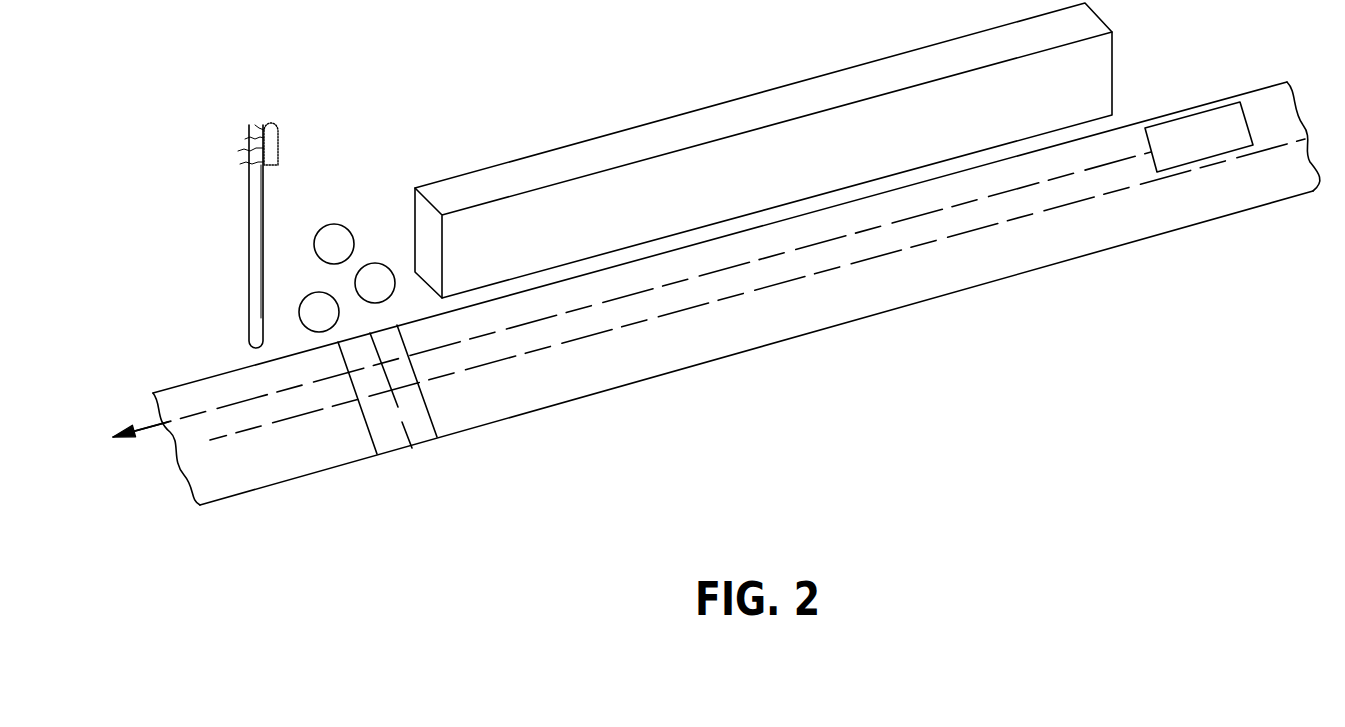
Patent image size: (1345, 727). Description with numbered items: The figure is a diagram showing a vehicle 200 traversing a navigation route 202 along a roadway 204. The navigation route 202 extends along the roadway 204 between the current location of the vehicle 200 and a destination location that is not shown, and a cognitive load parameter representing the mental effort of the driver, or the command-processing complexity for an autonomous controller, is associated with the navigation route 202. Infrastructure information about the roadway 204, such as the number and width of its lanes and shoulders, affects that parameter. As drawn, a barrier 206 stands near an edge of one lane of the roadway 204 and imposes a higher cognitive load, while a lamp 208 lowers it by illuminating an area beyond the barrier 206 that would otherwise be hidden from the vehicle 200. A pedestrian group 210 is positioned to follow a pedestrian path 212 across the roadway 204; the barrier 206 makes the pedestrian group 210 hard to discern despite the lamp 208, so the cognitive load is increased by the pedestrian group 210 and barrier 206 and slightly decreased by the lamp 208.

The vehicle 200 is at (1208, 108).
The navigation route 202 is at (218, 410).
The roadway 204 is at (792, 336).
The barrier 206 is at (658, 119).
The lamp 208 is at (277, 123).
The pedestrian group 210 is at (330, 213).
The pedestrian path 212 is at (424, 483).